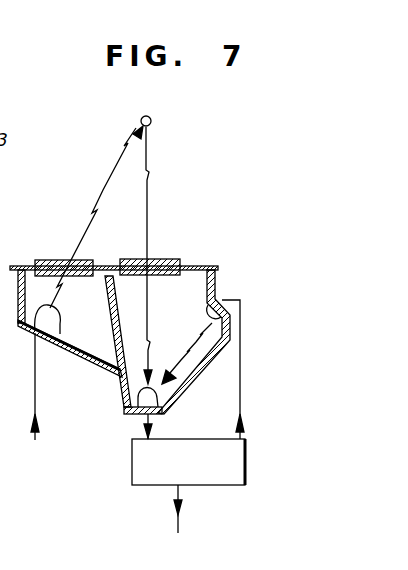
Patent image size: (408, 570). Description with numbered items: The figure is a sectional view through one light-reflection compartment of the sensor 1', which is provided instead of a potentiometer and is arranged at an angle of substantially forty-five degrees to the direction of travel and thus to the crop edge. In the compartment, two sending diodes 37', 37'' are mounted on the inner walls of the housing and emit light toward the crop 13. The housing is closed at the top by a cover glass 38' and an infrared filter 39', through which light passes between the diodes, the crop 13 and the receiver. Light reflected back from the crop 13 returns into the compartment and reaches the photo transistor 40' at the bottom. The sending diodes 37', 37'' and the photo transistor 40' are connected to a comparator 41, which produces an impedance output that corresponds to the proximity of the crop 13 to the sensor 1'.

The crop 13 is at (151, 119).
The sensor 1' is at (135, 234).
The cover glass 38' is at (64, 244).
The infrared filter 39' is at (163, 243).
The sending diode 37' is at (66, 319).
The sending diode 37'' is at (190, 314).
The photo transistor 40' is at (109, 416).
The comparator 41 is at (152, 467).